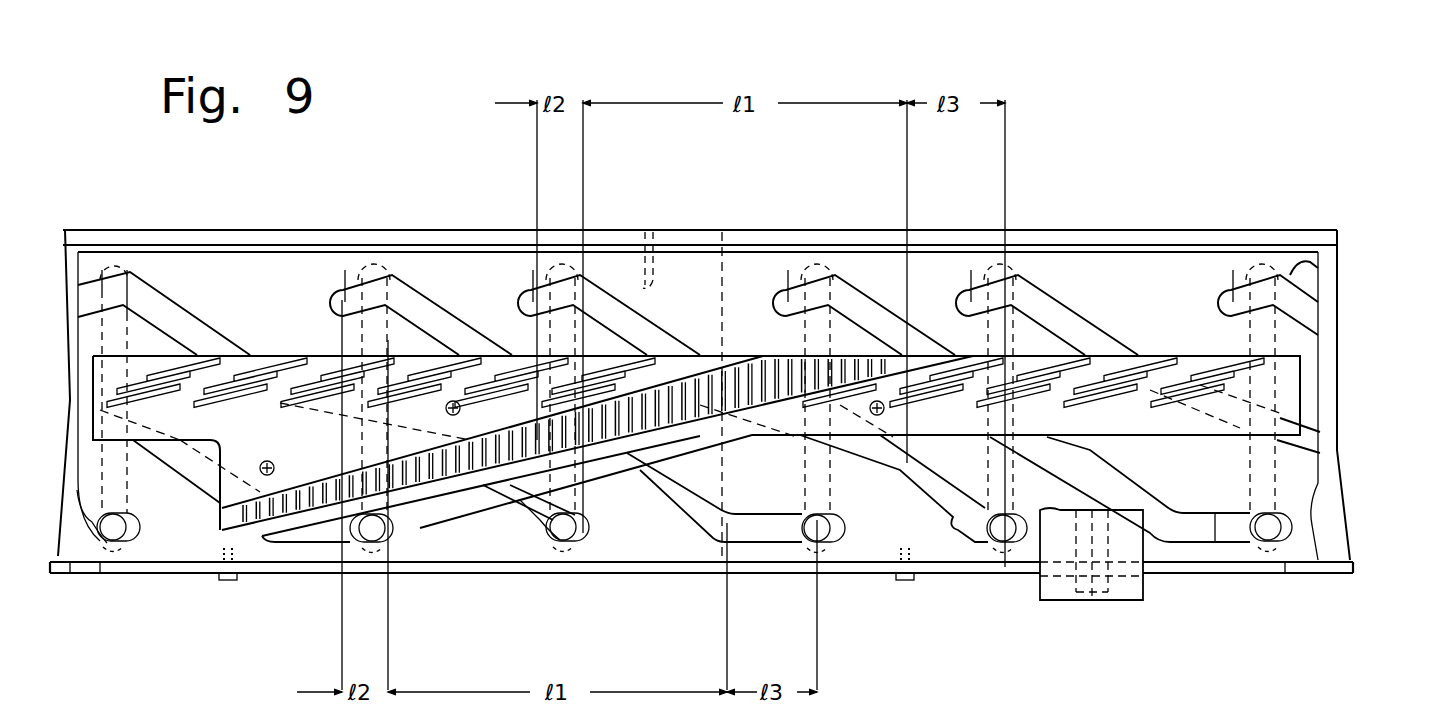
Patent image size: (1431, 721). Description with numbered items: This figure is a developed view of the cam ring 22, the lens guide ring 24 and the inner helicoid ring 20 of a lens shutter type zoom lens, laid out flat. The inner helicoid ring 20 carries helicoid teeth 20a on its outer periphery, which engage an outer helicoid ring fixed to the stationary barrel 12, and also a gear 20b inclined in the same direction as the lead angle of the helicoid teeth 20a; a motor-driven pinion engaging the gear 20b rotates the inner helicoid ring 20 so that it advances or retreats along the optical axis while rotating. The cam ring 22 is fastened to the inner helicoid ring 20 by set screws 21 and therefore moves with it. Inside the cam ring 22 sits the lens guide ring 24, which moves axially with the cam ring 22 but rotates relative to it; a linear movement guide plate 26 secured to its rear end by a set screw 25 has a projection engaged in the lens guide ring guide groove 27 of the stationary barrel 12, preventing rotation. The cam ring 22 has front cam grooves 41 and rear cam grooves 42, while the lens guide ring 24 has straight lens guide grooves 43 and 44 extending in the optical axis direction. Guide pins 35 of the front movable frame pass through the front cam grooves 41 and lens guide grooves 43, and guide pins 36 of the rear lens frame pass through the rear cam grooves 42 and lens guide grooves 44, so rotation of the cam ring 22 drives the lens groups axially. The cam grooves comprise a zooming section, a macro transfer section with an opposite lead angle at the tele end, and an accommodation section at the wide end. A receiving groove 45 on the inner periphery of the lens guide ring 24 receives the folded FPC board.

The stationary barrel 12 is at (1140, 598).
The inner helicoid ring 20 is at (470, 502).
The helicoid teeth 20a is at (312, 354).
The gear 20b is at (414, 510).
The set screws 21 is at (455, 400).
The cam ring 22 is at (713, 262).
The lens guide ring 24 is at (1338, 318).
The set screw 25 is at (228, 577).
The linear movement guide plate 26 is at (1258, 570).
The lens guide ring guide groove 27 is at (1092, 600).
The guide pins 35 is at (113, 540).
The guide pins 36 is at (371, 540).
The front cam grooves 41 is at (80, 565).
The rear cam grooves 42 is at (195, 447).
The lens guide grooves 43 is at (118, 278).
The lens guide grooves 44 is at (373, 285).
The receiving groove 45 is at (647, 232).